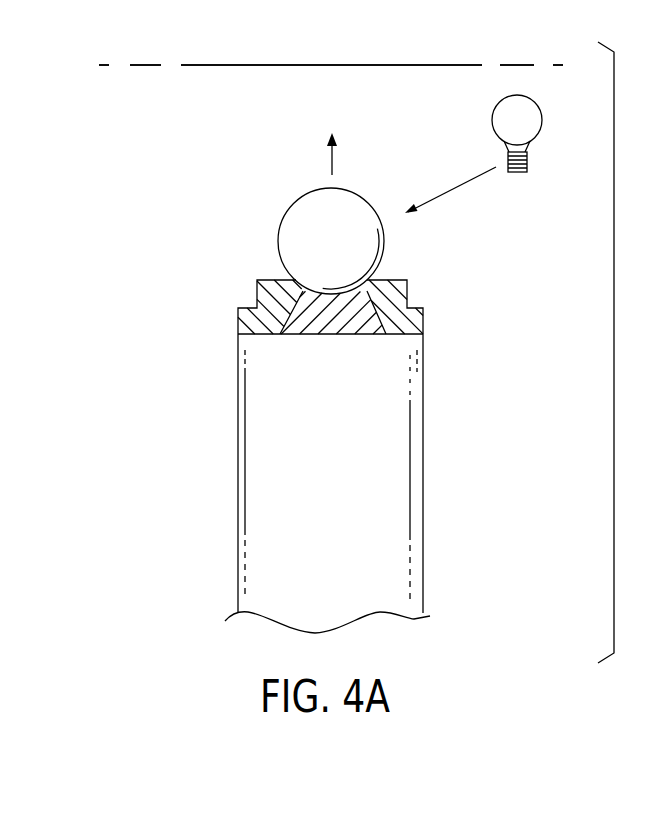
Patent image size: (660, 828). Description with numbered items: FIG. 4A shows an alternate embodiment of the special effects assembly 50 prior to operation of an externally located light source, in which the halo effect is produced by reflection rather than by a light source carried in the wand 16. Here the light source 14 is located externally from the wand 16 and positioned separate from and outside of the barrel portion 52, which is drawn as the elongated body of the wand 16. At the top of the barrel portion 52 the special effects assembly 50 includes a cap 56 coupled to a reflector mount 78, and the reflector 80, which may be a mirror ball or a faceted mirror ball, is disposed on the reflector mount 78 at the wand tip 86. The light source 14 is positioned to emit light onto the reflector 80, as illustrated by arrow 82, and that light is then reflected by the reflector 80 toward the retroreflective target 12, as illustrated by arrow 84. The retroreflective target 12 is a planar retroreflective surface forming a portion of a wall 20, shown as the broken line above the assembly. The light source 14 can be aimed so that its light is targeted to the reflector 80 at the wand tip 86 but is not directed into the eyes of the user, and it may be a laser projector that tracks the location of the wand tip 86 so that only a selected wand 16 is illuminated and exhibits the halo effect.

The retroreflective target 12 is at (408, 65).
The wall 20 is at (408, 65).
The light source 14 is at (527, 110).
The wand 16 is at (450, 408).
The special effects assembly 50 is at (502, 275).
The barrel portion 52 is at (253, 494).
The cap 56 is at (258, 320).
The reflector mount 78 is at (333, 320).
The reflector 80 is at (378, 242).
The arrow 82 is at (455, 189).
The arrow 84 is at (332, 158).
The wand tip 86 is at (268, 195).